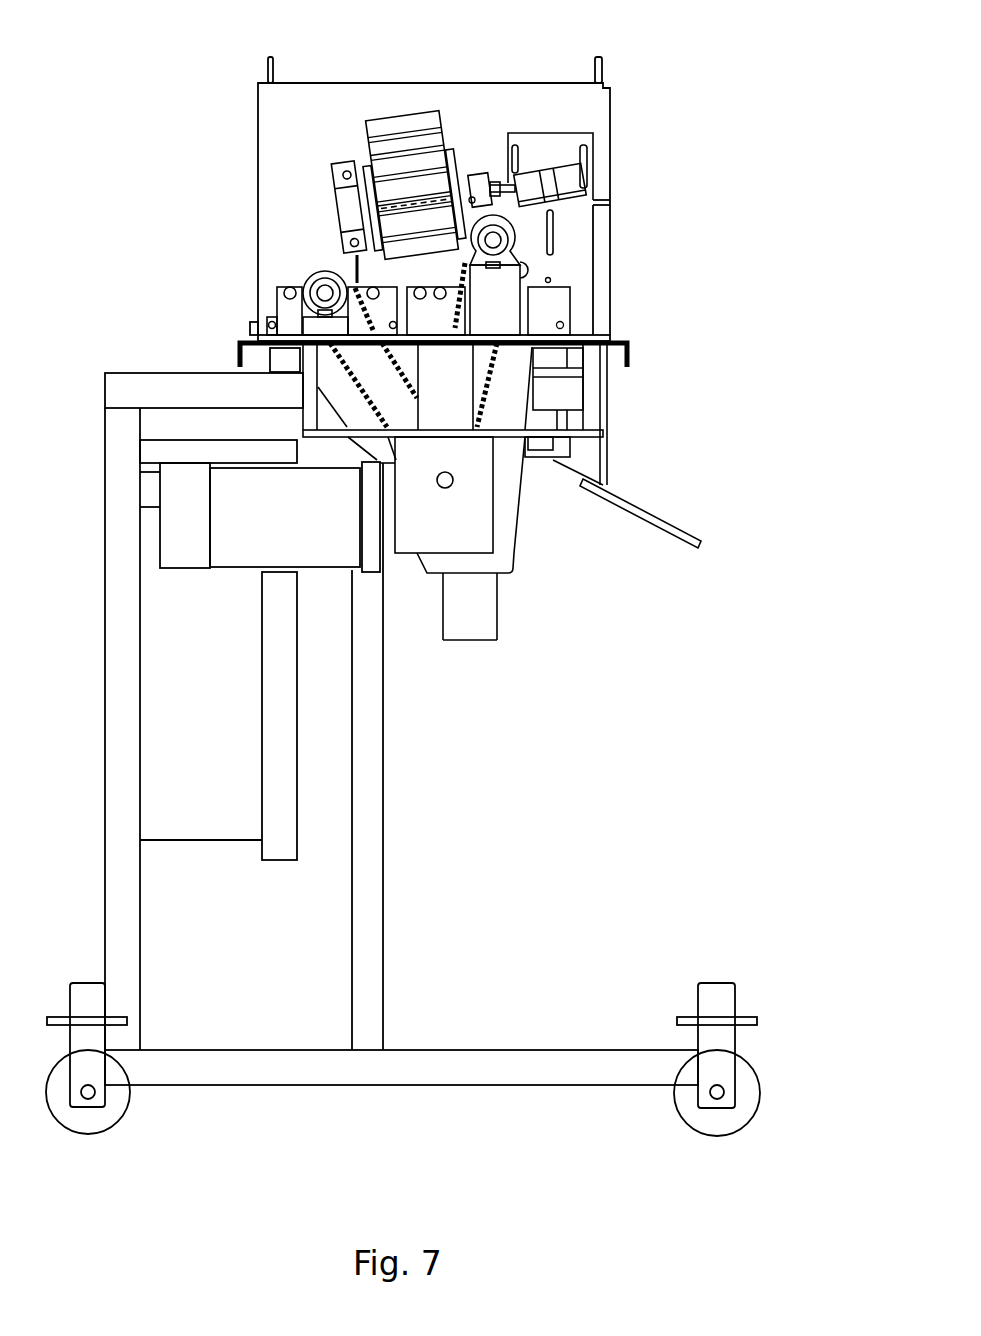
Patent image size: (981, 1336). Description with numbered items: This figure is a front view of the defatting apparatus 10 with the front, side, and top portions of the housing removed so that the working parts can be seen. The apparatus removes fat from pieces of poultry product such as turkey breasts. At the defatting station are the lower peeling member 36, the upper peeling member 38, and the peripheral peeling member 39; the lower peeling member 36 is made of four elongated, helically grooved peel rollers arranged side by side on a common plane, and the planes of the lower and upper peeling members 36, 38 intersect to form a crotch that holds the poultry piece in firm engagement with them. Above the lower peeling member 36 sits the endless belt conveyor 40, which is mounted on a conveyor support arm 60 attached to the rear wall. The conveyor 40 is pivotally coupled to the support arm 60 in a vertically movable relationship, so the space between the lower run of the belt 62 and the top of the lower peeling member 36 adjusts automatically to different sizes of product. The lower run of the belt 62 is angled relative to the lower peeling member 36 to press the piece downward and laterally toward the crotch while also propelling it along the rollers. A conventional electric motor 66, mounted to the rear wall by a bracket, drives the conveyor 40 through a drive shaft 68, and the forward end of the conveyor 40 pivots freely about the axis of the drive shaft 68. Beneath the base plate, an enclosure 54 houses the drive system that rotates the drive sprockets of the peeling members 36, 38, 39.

The defatting apparatus 10 is at (800, 82).
The lower peeling member 36 is at (440, 333).
The upper peeling member 38 is at (550, 268).
The peripheral peeling member 39 is at (278, 303).
The endless belt conveyor 40 is at (425, 130).
The enclosure 54 is at (468, 562).
The conveyor support arm 60 is at (350, 208).
The belt 62 is at (415, 183).
The electric motor 66 is at (565, 177).
The drive shaft 68 is at (480, 178).